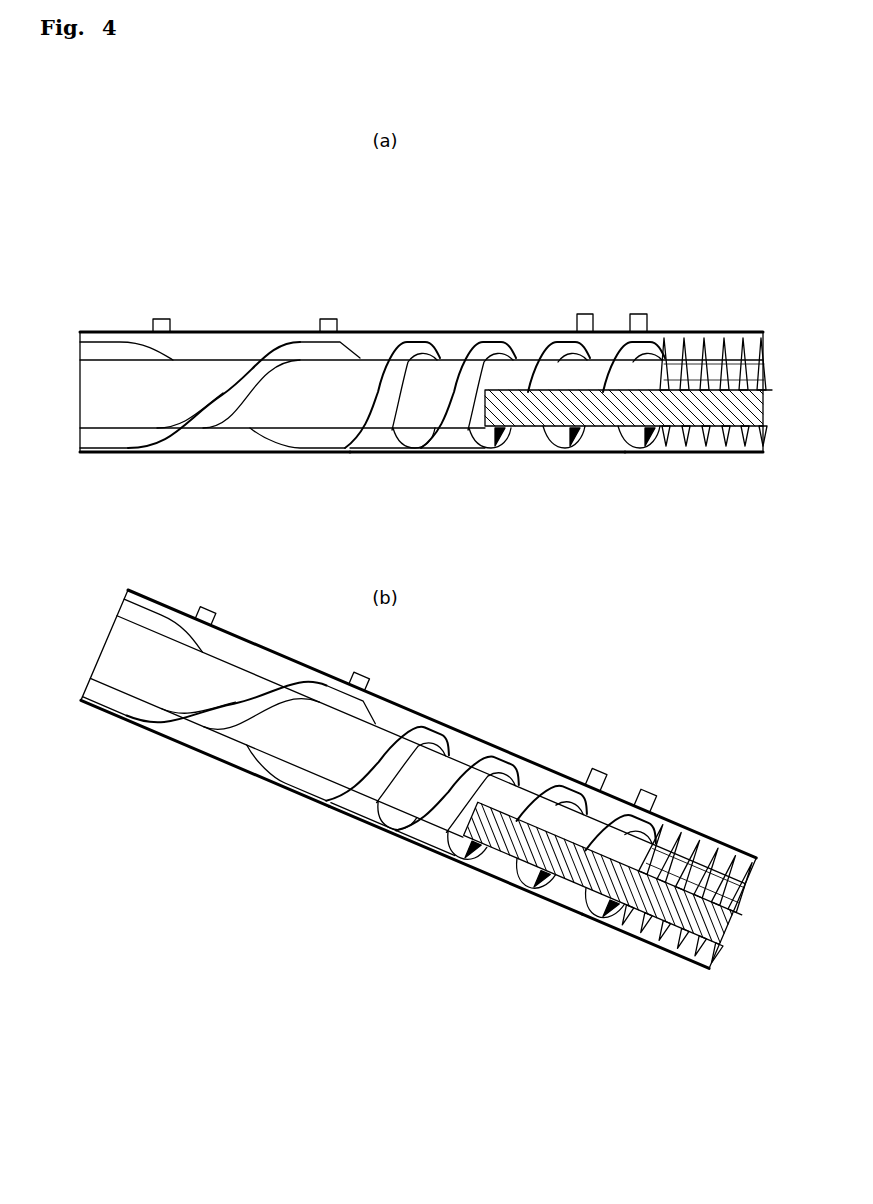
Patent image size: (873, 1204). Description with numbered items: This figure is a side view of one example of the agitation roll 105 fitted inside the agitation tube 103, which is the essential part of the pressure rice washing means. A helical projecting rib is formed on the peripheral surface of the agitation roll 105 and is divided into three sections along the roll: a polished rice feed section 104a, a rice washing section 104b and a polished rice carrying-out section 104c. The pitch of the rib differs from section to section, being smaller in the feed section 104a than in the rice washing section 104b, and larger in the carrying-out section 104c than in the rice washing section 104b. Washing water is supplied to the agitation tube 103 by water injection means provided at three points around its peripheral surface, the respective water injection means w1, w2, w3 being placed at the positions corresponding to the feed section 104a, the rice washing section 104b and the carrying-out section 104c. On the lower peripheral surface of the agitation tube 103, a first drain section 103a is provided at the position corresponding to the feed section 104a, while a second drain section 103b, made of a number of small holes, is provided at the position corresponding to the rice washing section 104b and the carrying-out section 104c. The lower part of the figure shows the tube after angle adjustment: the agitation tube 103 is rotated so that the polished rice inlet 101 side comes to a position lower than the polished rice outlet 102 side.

The polished rice inlet 101 is at (765, 412).
The polished rice outlet 102 is at (78, 400).
The agitation tube 103 is at (248, 332).
The first drain section 103a is at (685, 453).
The second drain section 103b is at (362, 456).
The polished rice feed section 104a is at (657, 453).
The rice washing section 104b is at (350, 498).
The polished rice carrying-out section 104c is at (270, 455).
The agitation roll 105 is at (367, 372).
The water injection means w1 is at (638, 314).
The water injection means w2 is at (330, 317).
The water injection means w3 is at (158, 317).